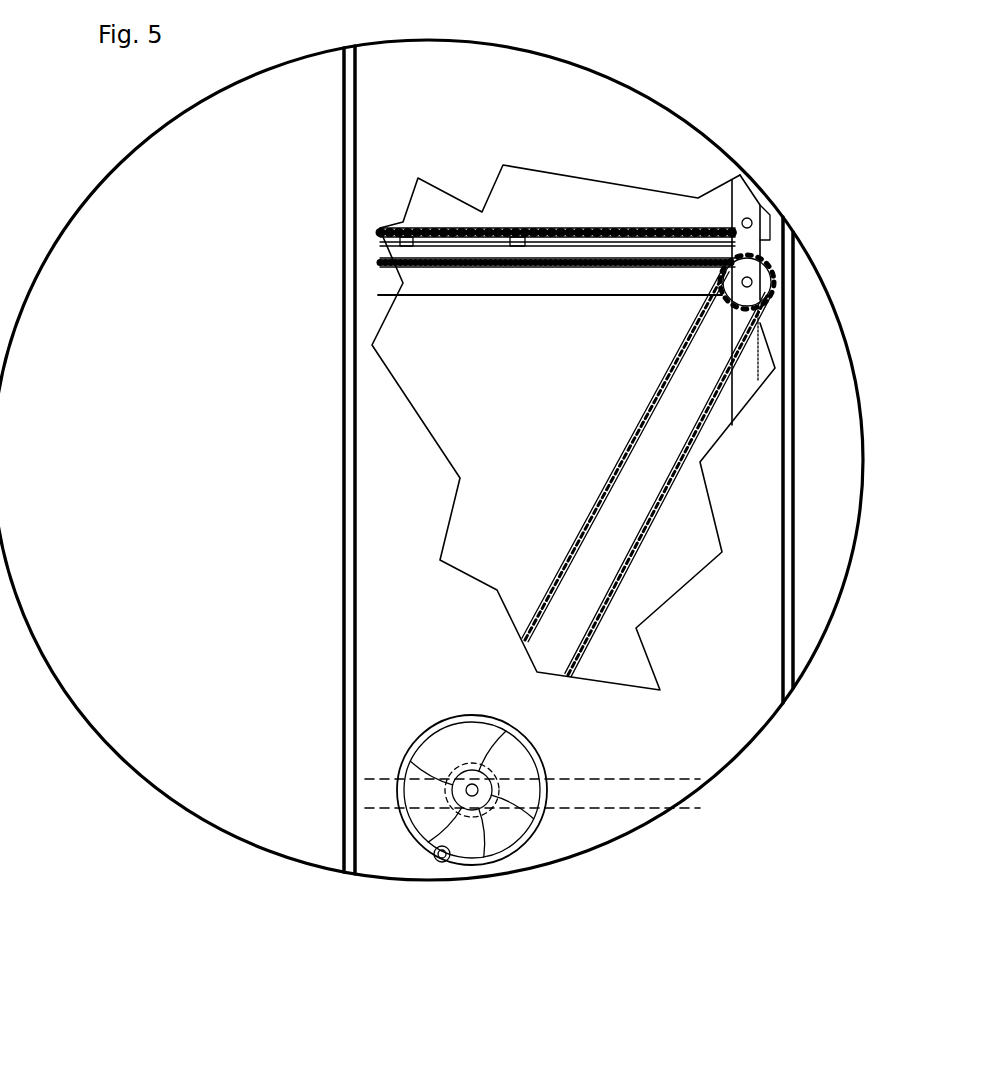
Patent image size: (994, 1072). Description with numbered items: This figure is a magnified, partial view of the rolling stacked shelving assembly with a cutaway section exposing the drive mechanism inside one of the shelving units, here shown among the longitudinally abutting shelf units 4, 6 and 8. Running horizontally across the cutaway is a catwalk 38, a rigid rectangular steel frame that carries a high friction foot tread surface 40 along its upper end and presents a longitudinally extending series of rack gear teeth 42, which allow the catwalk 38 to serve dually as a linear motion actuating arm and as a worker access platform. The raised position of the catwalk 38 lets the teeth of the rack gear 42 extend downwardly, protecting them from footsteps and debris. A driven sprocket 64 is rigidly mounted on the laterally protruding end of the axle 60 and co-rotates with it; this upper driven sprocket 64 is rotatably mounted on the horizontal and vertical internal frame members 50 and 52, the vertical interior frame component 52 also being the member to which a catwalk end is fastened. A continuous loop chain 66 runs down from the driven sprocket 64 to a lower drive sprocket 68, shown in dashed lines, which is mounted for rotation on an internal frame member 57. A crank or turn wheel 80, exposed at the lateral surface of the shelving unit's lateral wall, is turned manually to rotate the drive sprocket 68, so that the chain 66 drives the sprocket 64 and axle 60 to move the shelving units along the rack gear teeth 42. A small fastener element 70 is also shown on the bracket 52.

The shelf unit 4 is at (117, 252).
The shelf unit 6 is at (571, 110).
The shelf unit 8 is at (834, 383).
The catwalk 38 is at (467, 253).
The foot tread surface 40 is at (486, 230).
The rack gear teeth 42 is at (545, 262).
The horizontal internal frame member 50 is at (604, 284).
The vertical interior frame component 52 is at (740, 205).
The internal frame member 57 is at (597, 800).
The axle 60 is at (752, 286).
The driven sprocket 64 is at (756, 272).
The continuous loop chain 66 is at (648, 402).
The lower drive sprocket 68 is at (482, 818).
The fastener 70 is at (752, 222).
The turn wheel 80 is at (430, 735).